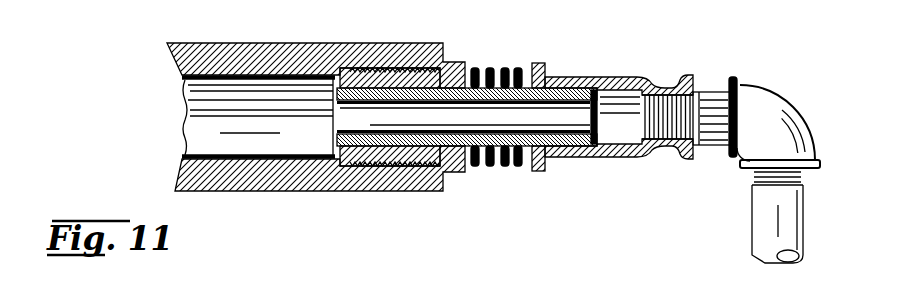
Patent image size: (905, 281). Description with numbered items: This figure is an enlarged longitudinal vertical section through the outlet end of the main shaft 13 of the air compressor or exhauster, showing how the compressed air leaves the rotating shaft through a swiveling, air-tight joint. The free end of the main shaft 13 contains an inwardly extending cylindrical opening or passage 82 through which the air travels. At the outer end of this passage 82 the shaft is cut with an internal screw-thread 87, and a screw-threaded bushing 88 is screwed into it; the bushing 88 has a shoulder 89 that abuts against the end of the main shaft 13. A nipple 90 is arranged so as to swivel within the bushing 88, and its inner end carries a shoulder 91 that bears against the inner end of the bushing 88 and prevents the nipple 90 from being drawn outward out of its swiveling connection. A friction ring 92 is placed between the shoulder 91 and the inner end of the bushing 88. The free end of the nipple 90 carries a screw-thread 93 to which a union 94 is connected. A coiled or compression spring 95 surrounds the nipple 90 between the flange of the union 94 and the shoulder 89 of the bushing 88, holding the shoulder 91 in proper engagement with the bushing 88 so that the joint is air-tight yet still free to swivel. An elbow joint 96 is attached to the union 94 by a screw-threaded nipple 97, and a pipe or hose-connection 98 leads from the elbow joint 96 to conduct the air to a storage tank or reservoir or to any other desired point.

The main shaft 13 is at (237, 55).
The cylindrical opening or passage 82 is at (205, 130).
The internal screw-thread 87 is at (388, 160).
The screw-threaded bushing 88 is at (390, 70).
The shoulder 89 is at (470, 68).
The nipple 90 is at (490, 72).
The shoulder 91 is at (300, 75).
The friction ring 92 is at (343, 76).
The screw-thread 93 is at (594, 122).
The union 94 is at (598, 84).
The coiled or compression spring 95 is at (523, 72).
The elbow joint 96 is at (763, 97).
The screw-threaded nipple 97 is at (707, 102).
The pipe or hose-connection 98 is at (763, 213).